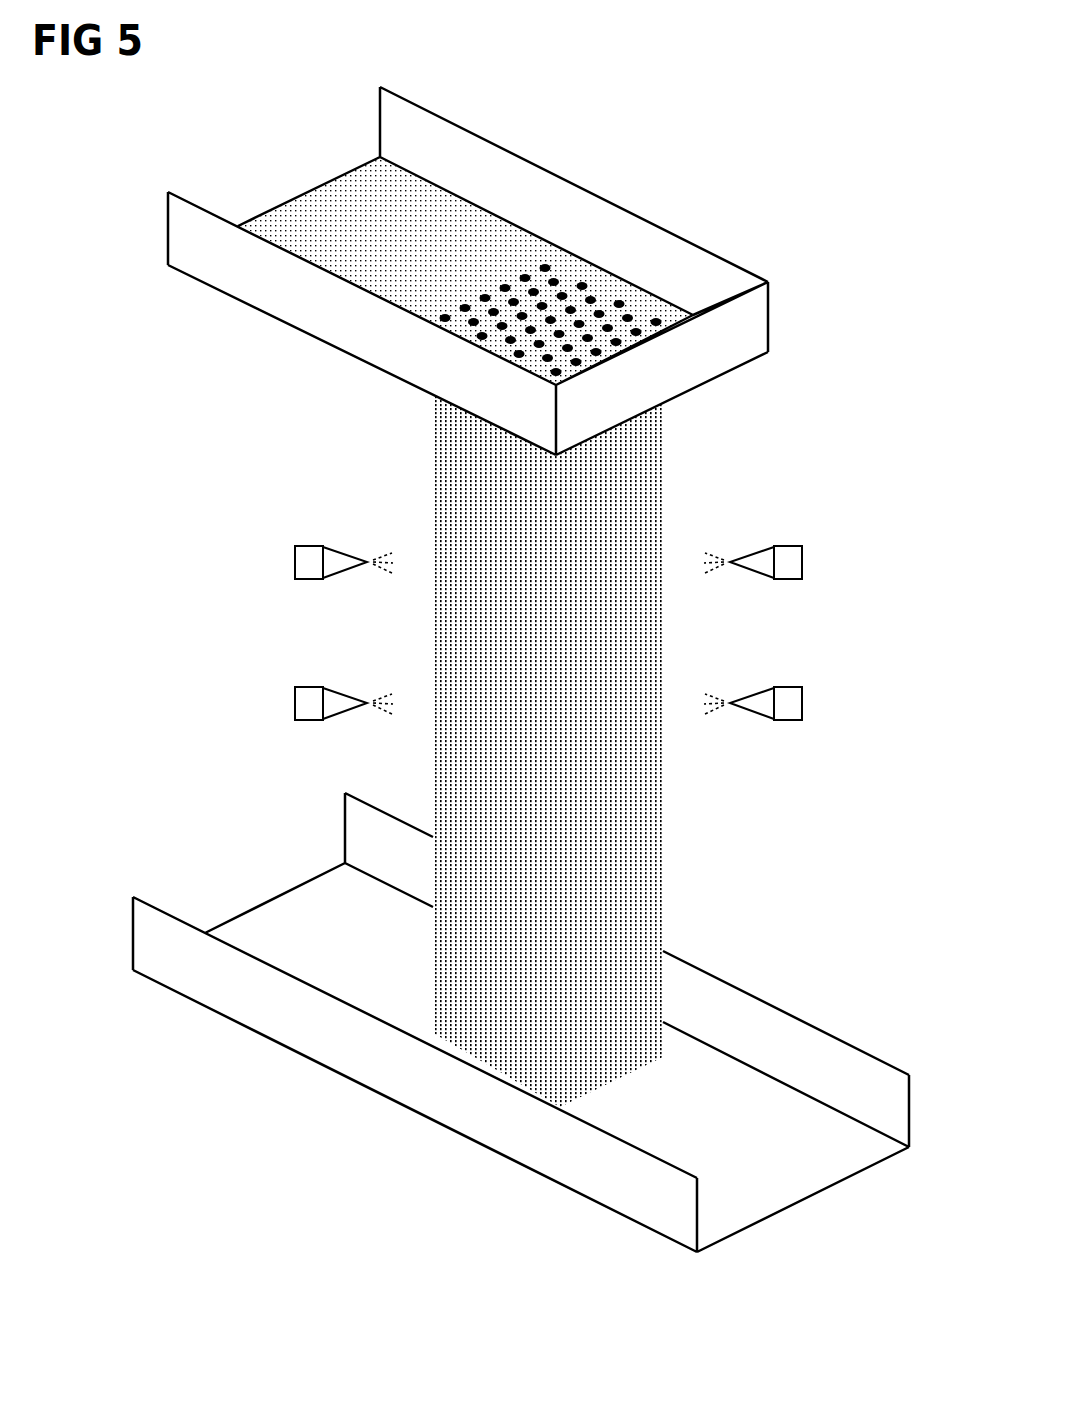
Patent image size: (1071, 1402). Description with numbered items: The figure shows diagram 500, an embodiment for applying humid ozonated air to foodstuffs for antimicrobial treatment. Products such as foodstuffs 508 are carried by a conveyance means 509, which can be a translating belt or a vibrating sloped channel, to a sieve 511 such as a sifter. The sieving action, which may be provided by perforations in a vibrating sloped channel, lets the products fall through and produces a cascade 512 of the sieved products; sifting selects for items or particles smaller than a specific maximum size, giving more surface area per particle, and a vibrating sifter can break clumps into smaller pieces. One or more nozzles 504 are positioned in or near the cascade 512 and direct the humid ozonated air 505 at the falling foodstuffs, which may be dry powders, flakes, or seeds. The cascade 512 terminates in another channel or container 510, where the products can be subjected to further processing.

The diagram 500 is at (802, 53).
The nozzles 504 is at (547, 649).
The humid ozonated air 505 is at (546, 652).
The foodstuffs 508 is at (423, 243).
The conveyance means 509 is at (713, 250).
The channel or container 510 is at (610, 1208).
The sieve 511 is at (582, 280).
The cascade 512 is at (645, 465).